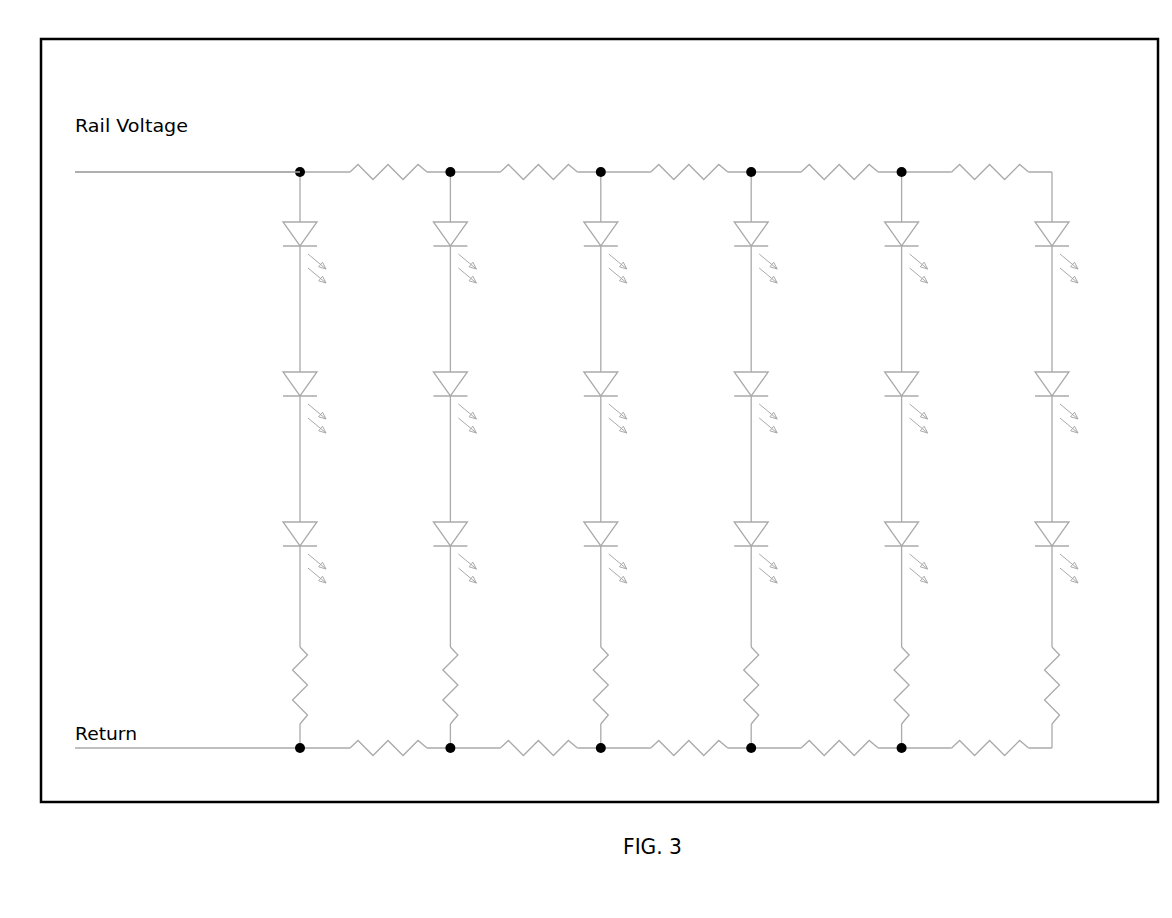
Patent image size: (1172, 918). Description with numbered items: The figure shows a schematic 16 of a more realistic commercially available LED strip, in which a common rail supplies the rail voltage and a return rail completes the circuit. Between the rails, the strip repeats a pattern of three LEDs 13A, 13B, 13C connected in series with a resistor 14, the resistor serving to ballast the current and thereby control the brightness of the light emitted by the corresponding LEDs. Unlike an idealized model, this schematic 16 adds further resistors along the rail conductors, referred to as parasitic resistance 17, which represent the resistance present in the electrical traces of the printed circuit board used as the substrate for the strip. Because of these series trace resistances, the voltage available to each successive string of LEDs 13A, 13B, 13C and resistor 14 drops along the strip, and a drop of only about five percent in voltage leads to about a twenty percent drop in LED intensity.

The LED 13A is at (287, 240).
The LED 13B is at (285, 392).
The LED 13C is at (287, 543).
The resistor 14 is at (292, 704).
The schematic 16 is at (336, 132).
The parasitic resistance 17 is at (390, 158).